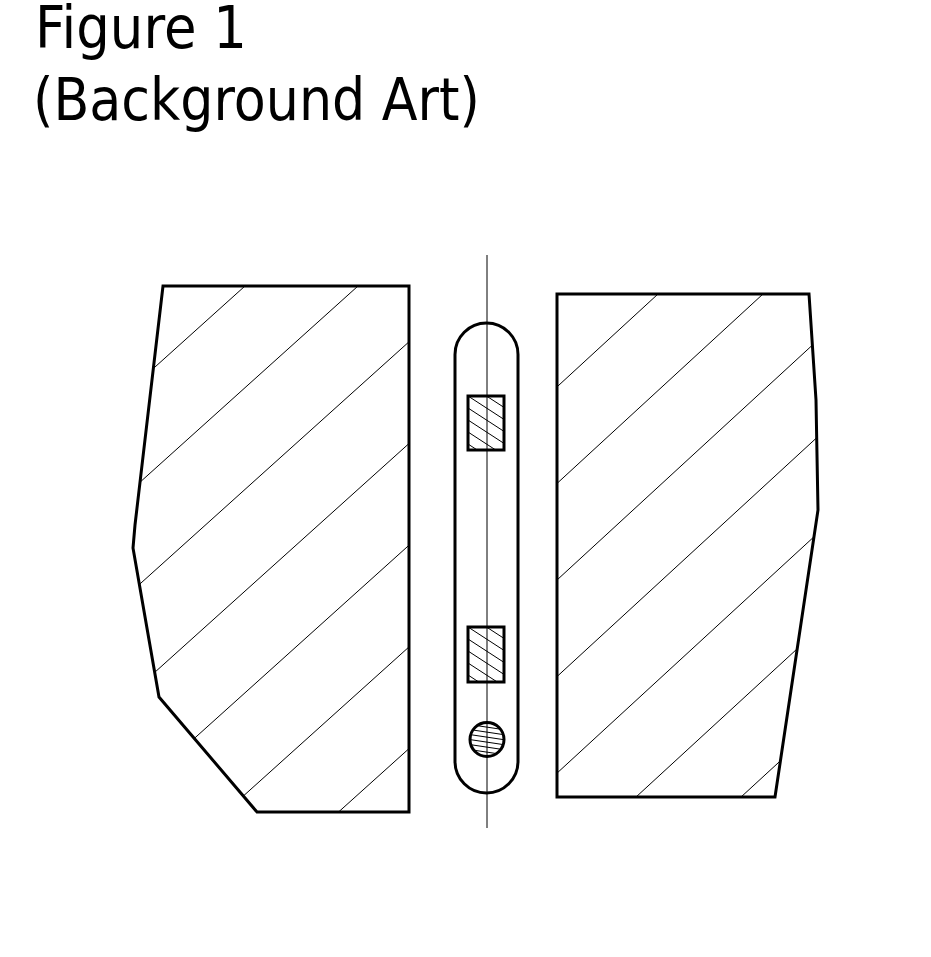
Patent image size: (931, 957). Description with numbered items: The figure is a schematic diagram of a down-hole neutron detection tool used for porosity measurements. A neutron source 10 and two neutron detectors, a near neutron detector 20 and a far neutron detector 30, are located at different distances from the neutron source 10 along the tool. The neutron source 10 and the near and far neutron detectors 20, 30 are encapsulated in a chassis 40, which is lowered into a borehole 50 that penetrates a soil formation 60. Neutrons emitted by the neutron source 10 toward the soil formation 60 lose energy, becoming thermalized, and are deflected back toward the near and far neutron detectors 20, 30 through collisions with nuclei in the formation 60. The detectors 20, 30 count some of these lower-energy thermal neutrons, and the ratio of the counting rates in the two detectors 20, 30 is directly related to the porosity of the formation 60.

The neutron source 10 is at (488, 758).
The near neutron detector 20 is at (496, 690).
The far neutron detector 30 is at (490, 391).
The chassis 40 is at (470, 328).
The borehole 50 is at (433, 762).
The soil formation 60 is at (220, 473).